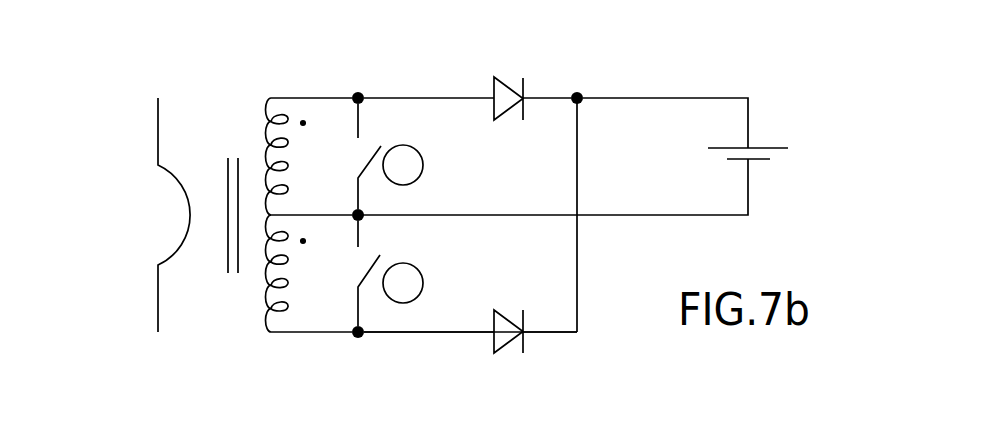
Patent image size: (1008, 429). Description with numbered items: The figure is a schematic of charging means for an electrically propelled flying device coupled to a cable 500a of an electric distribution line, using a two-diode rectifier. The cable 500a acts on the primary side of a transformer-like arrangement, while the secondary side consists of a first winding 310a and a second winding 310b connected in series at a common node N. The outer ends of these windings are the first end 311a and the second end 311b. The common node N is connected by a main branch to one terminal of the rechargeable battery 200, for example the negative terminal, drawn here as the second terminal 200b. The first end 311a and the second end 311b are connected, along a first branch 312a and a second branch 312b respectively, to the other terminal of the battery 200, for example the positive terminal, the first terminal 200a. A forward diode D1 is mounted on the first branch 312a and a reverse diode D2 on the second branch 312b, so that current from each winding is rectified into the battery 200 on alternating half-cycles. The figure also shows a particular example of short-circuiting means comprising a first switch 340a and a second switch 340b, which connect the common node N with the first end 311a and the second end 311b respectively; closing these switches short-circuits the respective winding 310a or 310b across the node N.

The cable 500a is at (157, 133).
The common node N is at (270, 215).
The first winding 310a is at (267, 138).
The second winding 310b is at (267, 297).
The first end 311a is at (272, 95).
The second end 311b is at (272, 333).
The first switch 340a is at (358, 92).
The second switch 340b is at (358, 338).
The first branch 312a is at (445, 97).
The second branch 312b is at (445, 338).
The forward diode D1 is at (503, 95).
The reverse diode D2 is at (503, 337).
The rechargeable battery 200 is at (750, 148).
The first terminal 200a is at (748, 96).
The second terminal 200b is at (749, 215).